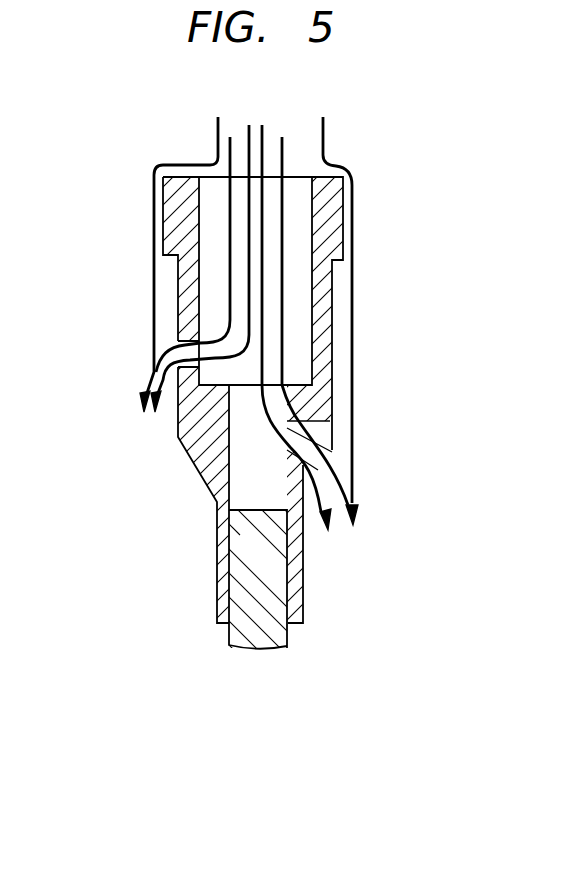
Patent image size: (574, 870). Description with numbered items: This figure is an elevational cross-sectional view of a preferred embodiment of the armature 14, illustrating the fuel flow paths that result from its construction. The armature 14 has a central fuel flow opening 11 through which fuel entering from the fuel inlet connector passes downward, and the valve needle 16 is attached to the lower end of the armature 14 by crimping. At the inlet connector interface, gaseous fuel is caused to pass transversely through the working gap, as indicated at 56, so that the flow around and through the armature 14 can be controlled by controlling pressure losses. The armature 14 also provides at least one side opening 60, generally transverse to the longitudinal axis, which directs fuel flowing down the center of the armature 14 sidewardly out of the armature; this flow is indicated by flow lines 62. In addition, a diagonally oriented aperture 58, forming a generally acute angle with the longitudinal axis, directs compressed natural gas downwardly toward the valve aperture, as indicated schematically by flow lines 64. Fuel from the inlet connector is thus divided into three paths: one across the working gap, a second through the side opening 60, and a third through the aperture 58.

The central fuel flow opening 11 is at (293, 217).
The armature 14 is at (335, 307).
The valve needle 16 is at (253, 633).
The transverse fuel flow through working gap 56 is at (160, 177).
The diagonally oriented aperture 58 is at (303, 437).
The side opening 60 is at (190, 333).
The flow lines 62 is at (147, 383).
The flow lines 64 is at (325, 490).